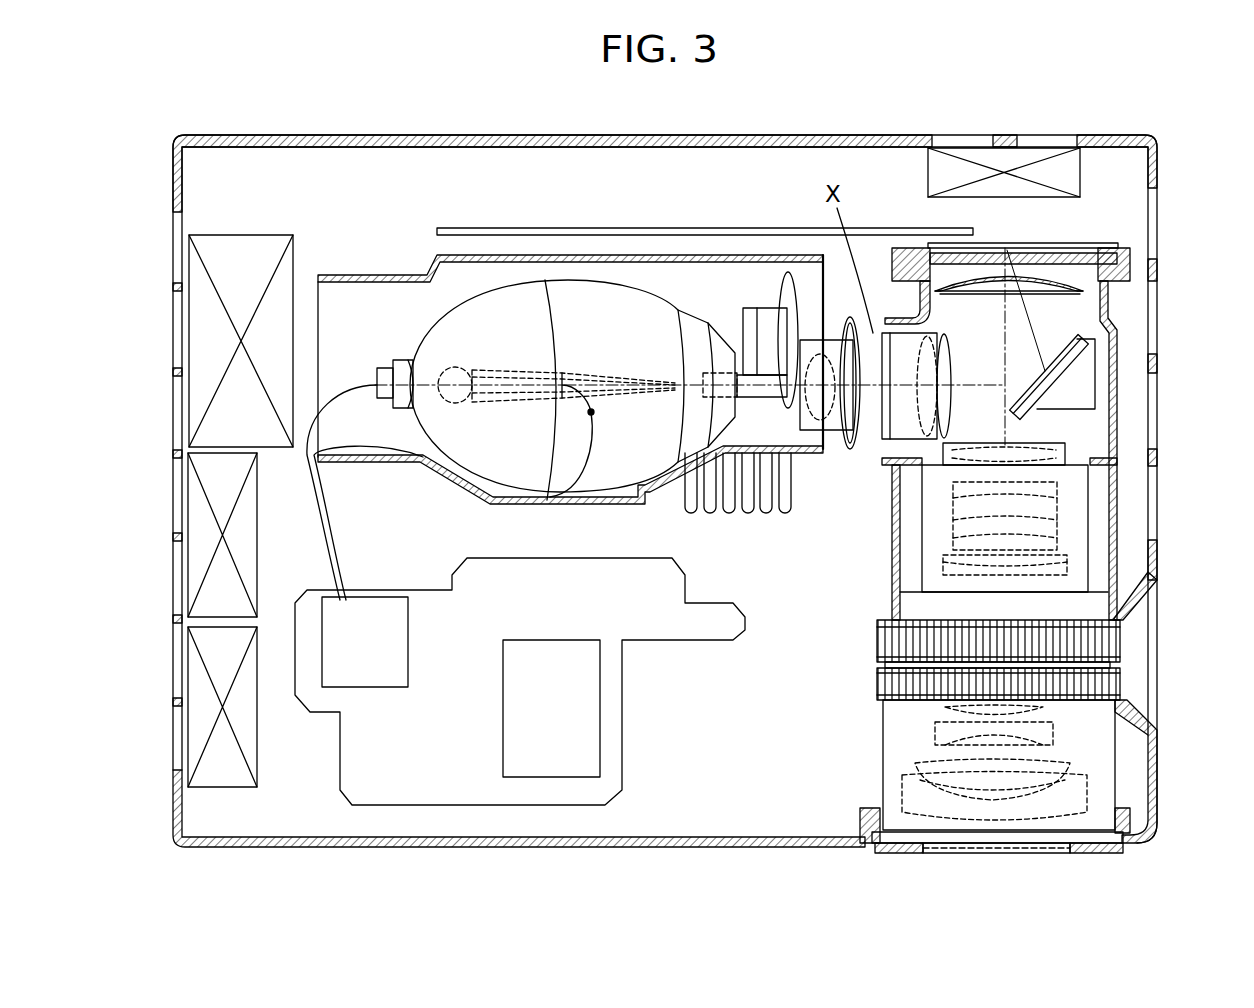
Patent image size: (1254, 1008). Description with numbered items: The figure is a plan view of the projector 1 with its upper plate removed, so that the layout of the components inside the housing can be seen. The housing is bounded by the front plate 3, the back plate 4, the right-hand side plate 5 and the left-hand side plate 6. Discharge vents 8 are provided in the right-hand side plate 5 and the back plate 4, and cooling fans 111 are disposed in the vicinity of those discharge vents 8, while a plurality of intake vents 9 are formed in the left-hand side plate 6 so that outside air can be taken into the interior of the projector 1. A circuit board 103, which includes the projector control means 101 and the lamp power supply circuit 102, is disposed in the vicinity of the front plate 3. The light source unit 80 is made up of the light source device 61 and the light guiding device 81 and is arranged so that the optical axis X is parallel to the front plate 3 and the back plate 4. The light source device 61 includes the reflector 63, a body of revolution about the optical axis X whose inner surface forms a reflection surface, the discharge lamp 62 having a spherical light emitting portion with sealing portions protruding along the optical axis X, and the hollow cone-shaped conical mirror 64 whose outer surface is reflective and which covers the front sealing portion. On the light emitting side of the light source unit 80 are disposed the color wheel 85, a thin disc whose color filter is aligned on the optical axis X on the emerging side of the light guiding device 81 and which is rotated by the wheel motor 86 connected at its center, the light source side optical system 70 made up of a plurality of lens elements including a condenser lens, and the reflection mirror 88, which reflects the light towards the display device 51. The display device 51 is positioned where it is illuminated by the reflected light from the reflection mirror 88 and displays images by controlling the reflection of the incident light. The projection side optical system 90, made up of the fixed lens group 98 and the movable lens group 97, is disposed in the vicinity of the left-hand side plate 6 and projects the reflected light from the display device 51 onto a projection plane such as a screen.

The projector 1 is at (1165, 132).
The front plate 3 is at (288, 847).
The back plate 4 is at (693, 135).
The right-hand side plate 5 is at (175, 183).
The left-hand side plate 6 is at (1158, 749).
The discharge vents 8 is at (186, 250).
The intake vents 9 is at (1157, 220).
The display device 51 is at (1098, 248).
The light source device 61 is at (500, 320).
The discharge lamp 62 is at (433, 386).
The reflector 63 is at (488, 448).
The conical mirror 64 is at (610, 393).
The light source side optical system 70 is at (912, 442).
The light source unit 80 is at (693, 290).
The light guiding device 81 is at (760, 385).
The color wheel 85 is at (790, 270).
The wheel motor 86 is at (766, 320).
The reflection mirror 88 is at (1060, 359).
The projection side optical system 90 is at (1080, 555).
The movable lens group 97 is at (941, 709).
The fixed lens group 98 is at (948, 524).
The projector control means 101 is at (548, 708).
The lamp power supply circuit 102 is at (363, 672).
The circuit board 103 is at (438, 765).
The cooling fans 111 is at (205, 348).